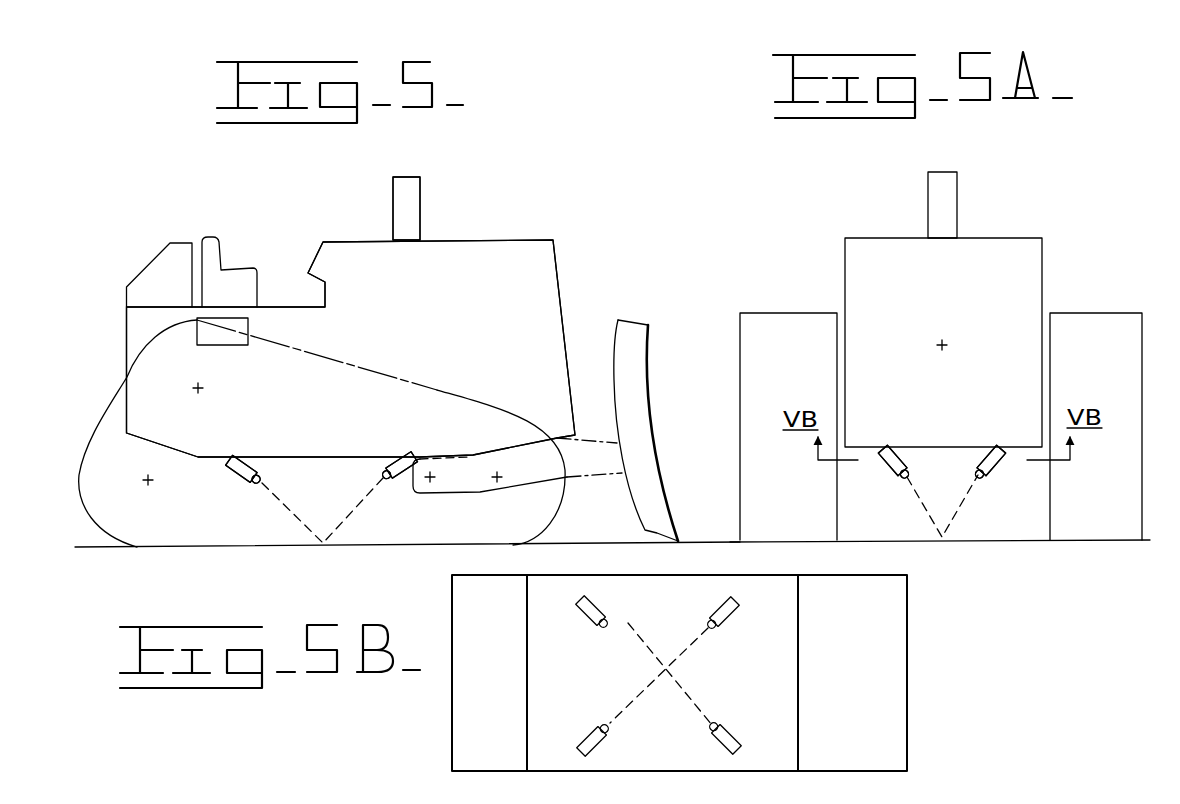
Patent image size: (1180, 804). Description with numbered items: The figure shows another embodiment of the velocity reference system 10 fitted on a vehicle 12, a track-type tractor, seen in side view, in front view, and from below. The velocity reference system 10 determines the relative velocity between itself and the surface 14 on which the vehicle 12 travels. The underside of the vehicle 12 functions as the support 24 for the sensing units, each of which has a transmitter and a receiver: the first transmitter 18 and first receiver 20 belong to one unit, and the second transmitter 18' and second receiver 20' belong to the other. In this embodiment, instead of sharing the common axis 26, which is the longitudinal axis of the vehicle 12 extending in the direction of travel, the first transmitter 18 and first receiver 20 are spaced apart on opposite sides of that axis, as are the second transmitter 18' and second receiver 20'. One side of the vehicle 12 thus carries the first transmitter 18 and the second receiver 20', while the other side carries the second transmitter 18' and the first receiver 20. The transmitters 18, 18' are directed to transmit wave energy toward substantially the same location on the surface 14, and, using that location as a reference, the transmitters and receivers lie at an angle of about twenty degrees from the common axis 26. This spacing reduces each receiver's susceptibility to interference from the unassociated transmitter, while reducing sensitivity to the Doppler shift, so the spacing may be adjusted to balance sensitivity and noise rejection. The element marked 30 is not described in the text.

In FIG. 5, the velocity reference system 10 is at (197, 196).
In FIG. 5, the vehicle 12 is at (516, 235).
In FIG. 5A, the vehicle 12 is at (872, 235).
In FIG. 5, the surface 14 is at (575, 542).
In FIG. 5A, the surface 14 is at (940, 541).
In FIG. 5, the first transmitter 18 is at (222, 485).
In FIG. 5A, the first transmitter 18 is at (1007, 475).
In FIG. 5B, the first transmitter 18 is at (576, 738).
In FIG. 5, the first receiver 20 is at (222, 485).
In FIG. 5A, the first receiver 20 is at (924, 463).
In FIG. 5B, the first receiver 20 is at (579, 615).
In FIG. 5, the second transmitter 18' is at (424, 487).
In FIG. 5A, the second transmitter 18' is at (924, 463).
In FIG. 5B, the second transmitter 18' is at (743, 615).
In FIG. 5, the second receiver 20' is at (424, 487).
In FIG. 5A, the second receiver 20' is at (1007, 475).
In FIG. 5B, the second receiver 20' is at (746, 737).
In FIG. 5, the support 24 is at (342, 460).
In FIG. 5A, the support 24 is at (868, 452).
In FIG. 5A, the common axis 26 is at (939, 343).
In FIG. 5, the control unit 30 is at (243, 323).